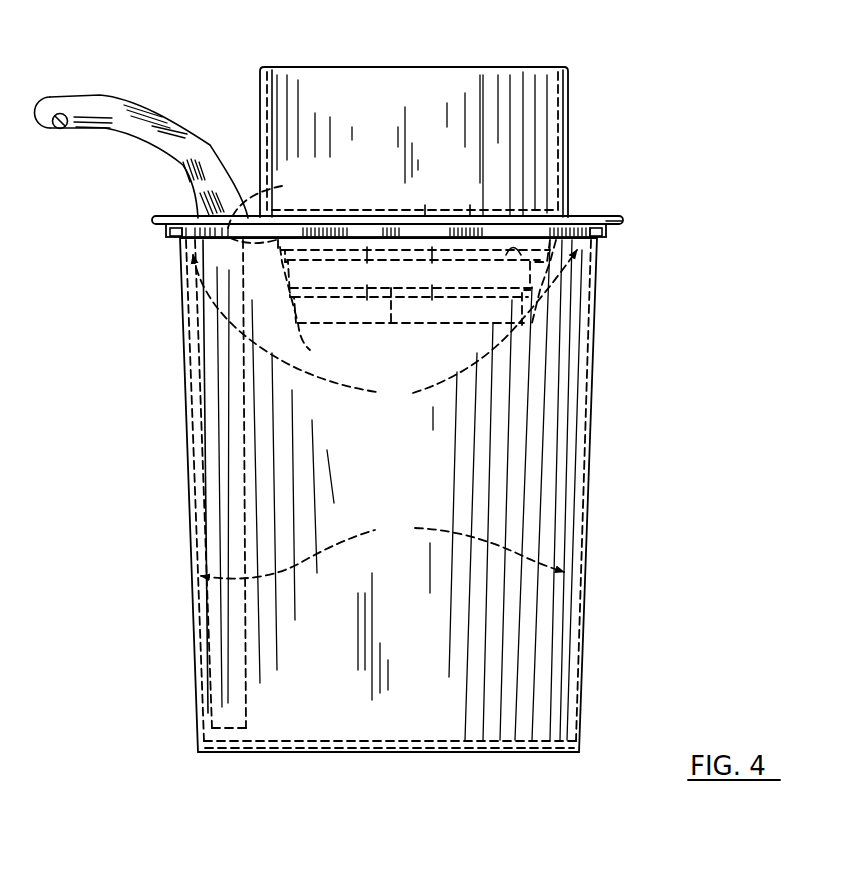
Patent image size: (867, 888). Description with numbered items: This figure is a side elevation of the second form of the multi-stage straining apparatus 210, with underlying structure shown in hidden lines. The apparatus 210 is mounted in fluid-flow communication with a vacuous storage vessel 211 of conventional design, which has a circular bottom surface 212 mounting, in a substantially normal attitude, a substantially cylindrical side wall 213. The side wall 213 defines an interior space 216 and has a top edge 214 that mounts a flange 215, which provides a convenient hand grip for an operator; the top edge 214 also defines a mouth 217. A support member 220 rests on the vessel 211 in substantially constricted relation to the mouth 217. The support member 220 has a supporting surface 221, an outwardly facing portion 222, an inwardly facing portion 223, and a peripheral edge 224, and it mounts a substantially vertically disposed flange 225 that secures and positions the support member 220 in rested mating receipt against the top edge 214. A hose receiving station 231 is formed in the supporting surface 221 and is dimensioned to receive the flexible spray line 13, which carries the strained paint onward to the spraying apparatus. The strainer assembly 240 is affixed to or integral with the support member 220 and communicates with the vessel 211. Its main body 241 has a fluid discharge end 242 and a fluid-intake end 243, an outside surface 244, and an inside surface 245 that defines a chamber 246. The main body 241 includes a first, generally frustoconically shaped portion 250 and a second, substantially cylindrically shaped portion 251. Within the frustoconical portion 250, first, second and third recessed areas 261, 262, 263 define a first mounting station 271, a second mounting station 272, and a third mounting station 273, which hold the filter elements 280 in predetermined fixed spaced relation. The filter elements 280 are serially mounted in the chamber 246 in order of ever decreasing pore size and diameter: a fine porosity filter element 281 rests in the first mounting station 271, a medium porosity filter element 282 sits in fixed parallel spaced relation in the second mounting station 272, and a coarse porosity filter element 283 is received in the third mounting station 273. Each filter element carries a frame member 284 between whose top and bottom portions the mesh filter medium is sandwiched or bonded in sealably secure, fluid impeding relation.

The flexible spray line 13 is at (105, 110).
The multi-stage straining apparatus 210 is at (652, 108).
The vacuous storage vessel 211 is at (200, 402).
The bottom surface 212 is at (362, 742).
The cylindrical side wall 213 is at (188, 468).
The top edge 214 is at (168, 218).
The flange 215 is at (168, 233).
The space 216 is at (382, 547).
The mouth 217 is at (385, 324).
The support member 220 is at (580, 216).
The supporting surface 221 is at (195, 205).
The outwardly facing portion 222 is at (185, 215).
The inwardly facing portion 223 is at (610, 230).
The peripheral edge 224 is at (623, 221).
The vertically disposed flange 225 is at (598, 224).
The hose receiving station 231 is at (268, 190).
The strainer assembly 240 is at (474, 65).
The main body 241 is at (268, 118).
The fluid discharge end 242 is at (308, 338).
The fluid-intake end 243 is at (269, 67).
The outside surface 244 is at (568, 88).
The inside surface 245 is at (558, 98).
The chamber 246 is at (417, 118).
The frustoconically shaped portion 250 is at (278, 282).
The cylindrically shaped portion 251 is at (569, 132).
The first recessed area 261 is at (320, 296).
The second recessed area 262 is at (302, 256).
The third recessed area 263 is at (278, 248).
The first mounting station 271 is at (462, 290).
The second mounting station 272 is at (440, 252).
The third mounting station 273 is at (462, 210).
The filter elements 280 is at (352, 207).
The fine porosity filter element 281 is at (503, 318).
The medium porosity filter element 282 is at (516, 257).
The coarse porosity filter element 283 is at (420, 210).
The frame member 284 is at (288, 208).